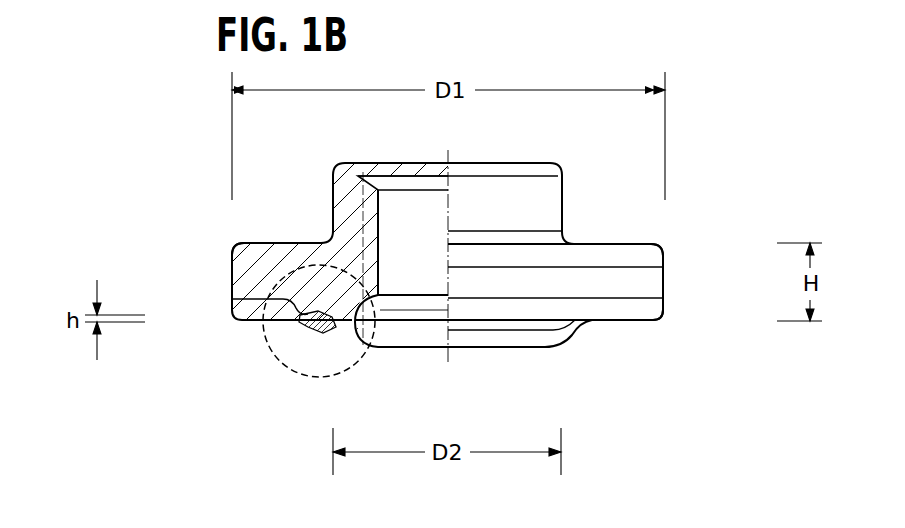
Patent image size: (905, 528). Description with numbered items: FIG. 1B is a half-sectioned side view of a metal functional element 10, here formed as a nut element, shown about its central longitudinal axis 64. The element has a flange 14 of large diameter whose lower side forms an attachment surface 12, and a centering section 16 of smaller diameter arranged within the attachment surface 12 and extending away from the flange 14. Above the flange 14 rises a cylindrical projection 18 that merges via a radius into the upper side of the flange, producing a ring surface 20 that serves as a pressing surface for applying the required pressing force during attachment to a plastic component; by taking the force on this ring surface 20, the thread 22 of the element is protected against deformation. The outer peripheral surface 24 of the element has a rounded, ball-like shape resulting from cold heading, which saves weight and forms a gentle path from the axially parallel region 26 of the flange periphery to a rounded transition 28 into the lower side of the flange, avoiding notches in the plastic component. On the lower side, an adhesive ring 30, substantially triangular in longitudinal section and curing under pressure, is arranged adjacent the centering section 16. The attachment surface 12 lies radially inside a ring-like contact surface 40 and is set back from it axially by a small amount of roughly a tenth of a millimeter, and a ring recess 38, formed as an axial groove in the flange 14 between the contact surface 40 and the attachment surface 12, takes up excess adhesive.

The functional element 10 is at (232, 323).
The attachment surface 12 is at (312, 314).
The flange 14 is at (652, 288).
The centering section 16 is at (552, 338).
The cylindrical projection 18 is at (562, 192).
The ring surface 20 is at (612, 243).
The thread 22 is at (376, 224).
The outer peripheral surface 24 is at (231, 262).
The axially parallel region 26 is at (664, 266).
The rounded transition 28 is at (664, 321).
The adhesive ring 30 is at (318, 376).
The ring recess 38 is at (232, 299).
The contact surface 40 is at (266, 318).
The central longitudinal axis 64 is at (448, 358).